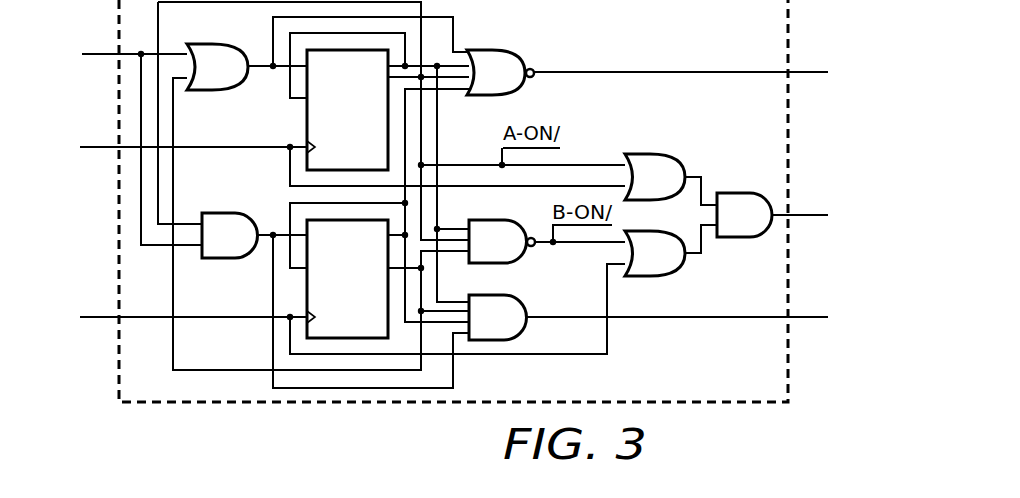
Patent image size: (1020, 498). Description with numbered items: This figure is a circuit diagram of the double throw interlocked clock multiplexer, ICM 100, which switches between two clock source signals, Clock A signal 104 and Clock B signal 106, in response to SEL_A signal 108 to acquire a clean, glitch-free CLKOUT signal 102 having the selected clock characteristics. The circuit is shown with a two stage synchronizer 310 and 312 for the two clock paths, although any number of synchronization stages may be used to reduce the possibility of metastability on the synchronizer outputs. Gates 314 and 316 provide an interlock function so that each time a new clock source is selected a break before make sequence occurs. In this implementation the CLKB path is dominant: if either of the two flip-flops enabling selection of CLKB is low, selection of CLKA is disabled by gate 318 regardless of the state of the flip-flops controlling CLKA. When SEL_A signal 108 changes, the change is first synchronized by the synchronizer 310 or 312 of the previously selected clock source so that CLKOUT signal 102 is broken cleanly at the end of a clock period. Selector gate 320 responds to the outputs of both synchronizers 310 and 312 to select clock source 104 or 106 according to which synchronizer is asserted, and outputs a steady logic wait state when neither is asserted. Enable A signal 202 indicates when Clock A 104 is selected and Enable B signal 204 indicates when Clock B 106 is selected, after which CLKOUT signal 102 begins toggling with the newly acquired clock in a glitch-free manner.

The ICM 100 is at (643, 38).
The CLKOUT signal 102 is at (804, 214).
The Clock A signal 104 is at (101, 318).
The Clock B signal 106 is at (102, 146).
The SEL_A signal 108 is at (102, 53).
The Enable A signal 202 is at (804, 318).
The Enable B signal 204 is at (804, 71).
The synchronizer 310 is at (372, 152).
The synchronizer 312 is at (372, 322).
The gate 314 is at (208, 92).
The gate 316 is at (224, 260).
The gate 318 is at (522, 264).
The selector gate 320 is at (746, 191).